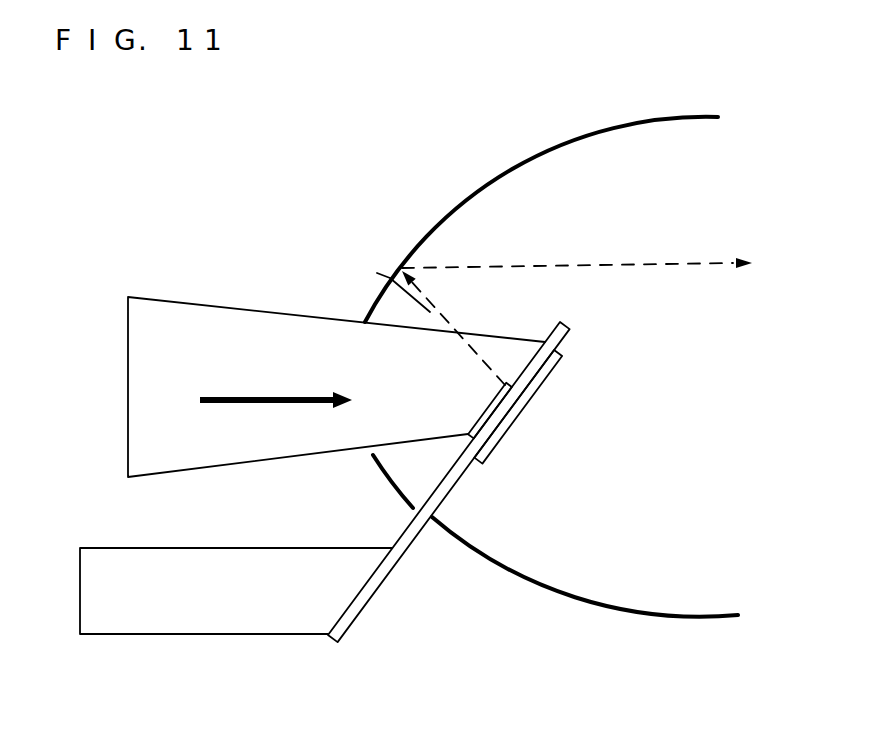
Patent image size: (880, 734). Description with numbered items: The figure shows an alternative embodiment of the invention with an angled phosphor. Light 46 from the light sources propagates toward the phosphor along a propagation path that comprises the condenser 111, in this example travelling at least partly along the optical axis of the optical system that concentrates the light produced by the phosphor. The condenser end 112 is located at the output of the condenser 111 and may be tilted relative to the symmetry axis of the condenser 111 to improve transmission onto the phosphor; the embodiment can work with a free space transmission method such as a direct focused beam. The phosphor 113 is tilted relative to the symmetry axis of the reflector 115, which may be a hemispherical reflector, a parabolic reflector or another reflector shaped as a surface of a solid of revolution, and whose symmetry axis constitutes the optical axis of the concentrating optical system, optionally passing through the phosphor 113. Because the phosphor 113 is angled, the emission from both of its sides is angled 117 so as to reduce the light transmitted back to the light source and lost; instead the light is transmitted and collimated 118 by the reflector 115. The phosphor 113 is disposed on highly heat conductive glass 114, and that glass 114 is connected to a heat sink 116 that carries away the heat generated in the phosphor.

The light 46 is at (200, 400).
The condenser 111 is at (143, 335).
The condenser end 112 is at (482, 410).
The phosphor 113 is at (523, 418).
The highly heat conductive glass 114 is at (362, 600).
The reflector 115 is at (678, 605).
The heat sink 116 is at (178, 613).
The angled emission 117 is at (377, 273).
The transmitted and collimated light 118 is at (712, 262).